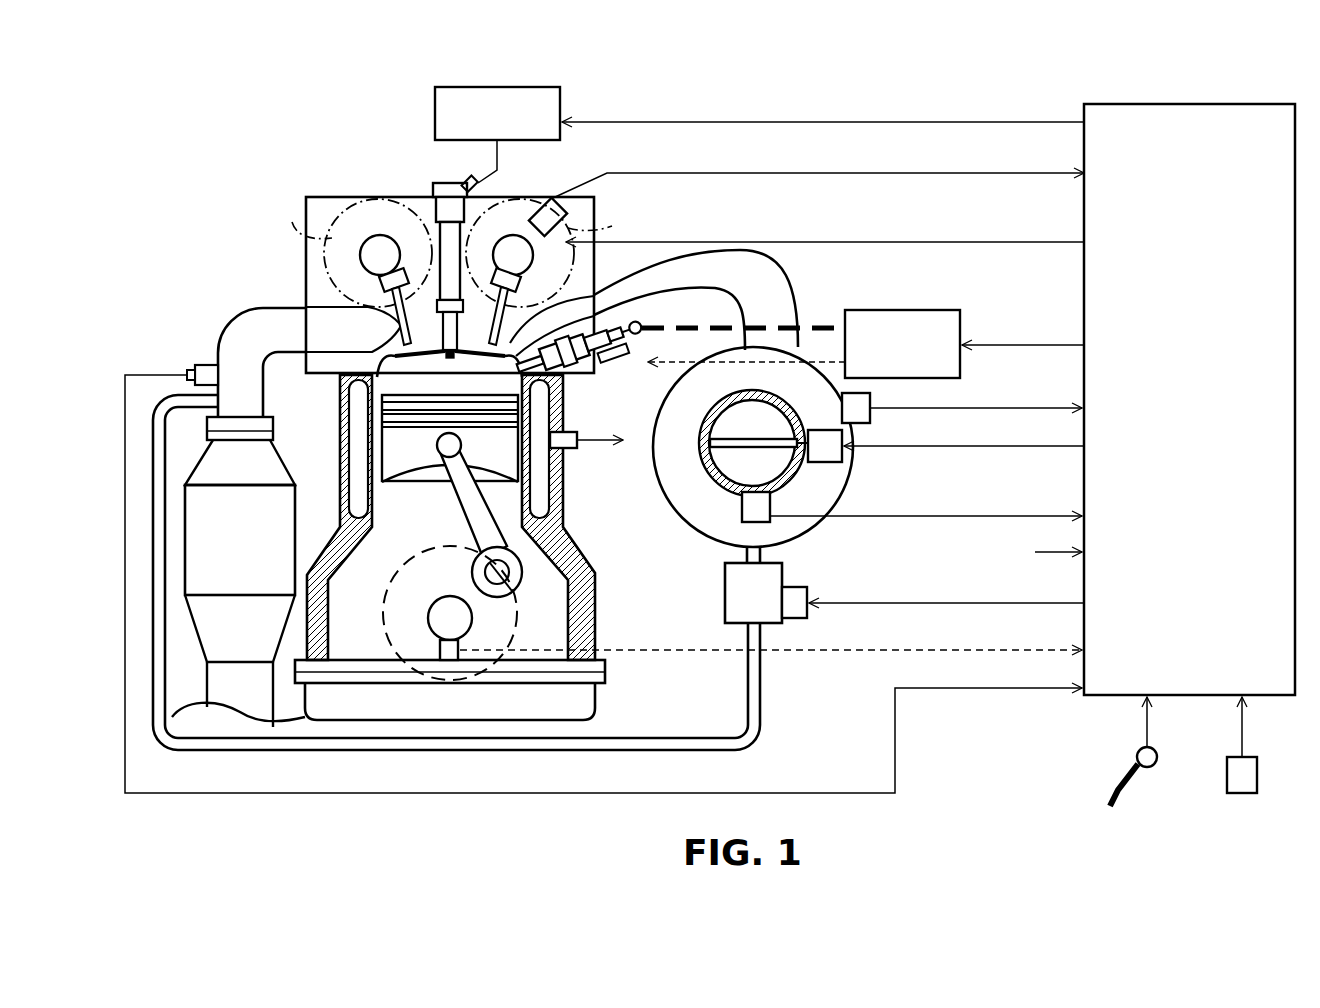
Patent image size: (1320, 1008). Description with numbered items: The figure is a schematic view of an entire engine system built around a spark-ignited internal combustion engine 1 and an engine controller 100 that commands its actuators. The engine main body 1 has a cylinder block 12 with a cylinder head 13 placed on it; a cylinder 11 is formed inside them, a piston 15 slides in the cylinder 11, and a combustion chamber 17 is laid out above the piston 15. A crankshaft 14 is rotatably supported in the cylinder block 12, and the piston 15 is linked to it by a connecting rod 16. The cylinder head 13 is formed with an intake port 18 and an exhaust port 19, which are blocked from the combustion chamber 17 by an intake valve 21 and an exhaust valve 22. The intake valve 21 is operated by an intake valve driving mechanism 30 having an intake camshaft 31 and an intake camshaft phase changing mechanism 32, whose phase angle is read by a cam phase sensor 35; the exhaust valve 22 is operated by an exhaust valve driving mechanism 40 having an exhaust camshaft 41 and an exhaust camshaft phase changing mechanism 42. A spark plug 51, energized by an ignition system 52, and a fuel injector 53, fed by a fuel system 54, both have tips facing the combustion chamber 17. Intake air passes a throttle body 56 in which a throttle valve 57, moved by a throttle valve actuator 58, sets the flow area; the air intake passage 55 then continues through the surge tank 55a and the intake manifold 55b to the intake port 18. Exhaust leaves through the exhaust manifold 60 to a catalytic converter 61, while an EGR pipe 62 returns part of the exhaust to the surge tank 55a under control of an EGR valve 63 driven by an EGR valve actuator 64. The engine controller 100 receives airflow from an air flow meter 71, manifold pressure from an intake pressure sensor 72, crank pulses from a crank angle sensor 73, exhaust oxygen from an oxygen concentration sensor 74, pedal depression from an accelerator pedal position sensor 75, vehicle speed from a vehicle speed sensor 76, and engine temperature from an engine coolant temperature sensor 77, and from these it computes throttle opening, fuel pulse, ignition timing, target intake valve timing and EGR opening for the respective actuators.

The engine main body 1 is at (620, 674).
The cylinder 11 is at (341, 402).
The cylinder block 12 is at (594, 617).
The cylinder head 13 is at (328, 380).
The crankshaft 14 is at (450, 613).
The piston 15 is at (433, 467).
The connecting rod 16 is at (453, 514).
The combustion chamber 17 is at (449, 372).
The intake port 18 is at (552, 326).
The exhaust port 19 is at (358, 329).
The intake valve 21 is at (508, 354).
The exhaust valve 22 is at (393, 354).
The intake valve driving mechanism 30 is at (522, 207).
The intake camshaft 31 is at (513, 255).
The intake camshaft phase changing mechanism 32 is at (825, 220).
The cam phase sensor 35 is at (560, 194).
The exhaust valve driving mechanism 40 is at (376, 200).
The exhaust camshaft 41 is at (380, 255).
The exhaust camshaft phase changing mechanism 42 is at (299, 220).
The spark plug 51 is at (433, 340).
The ignition system 52 is at (560, 103).
The fuel injector 53 is at (572, 368).
The fuel system 54 is at (920, 310).
The air intake passage 55 is at (726, 398).
The surge tank 55a is at (753, 447).
The intake manifold 55b is at (696, 300).
The throttle body 56 is at (718, 476).
The throttle valve 57 is at (727, 467).
The throttle valve actuator 58 is at (830, 462).
The exhaust manifold 60 is at (262, 306).
The catalytic converter 61 is at (238, 572).
The EGR pipe 62 is at (762, 724).
The EGR valve 63 is at (753, 593).
The EGR valve actuator 64 is at (797, 587).
The air flow meter 71 is at (742, 513).
The intake pressure sensor 72 is at (870, 416).
The crank angle sensor 73 is at (438, 652).
The oxygen concentration sensor 74 is at (207, 365).
The accelerator pedal position sensor 75 is at (1137, 752).
The vehicle speed sensor 76 is at (1227, 776).
The engine coolant temperature sensor 77 is at (568, 450).
The engine controller 100 is at (1205, 104).